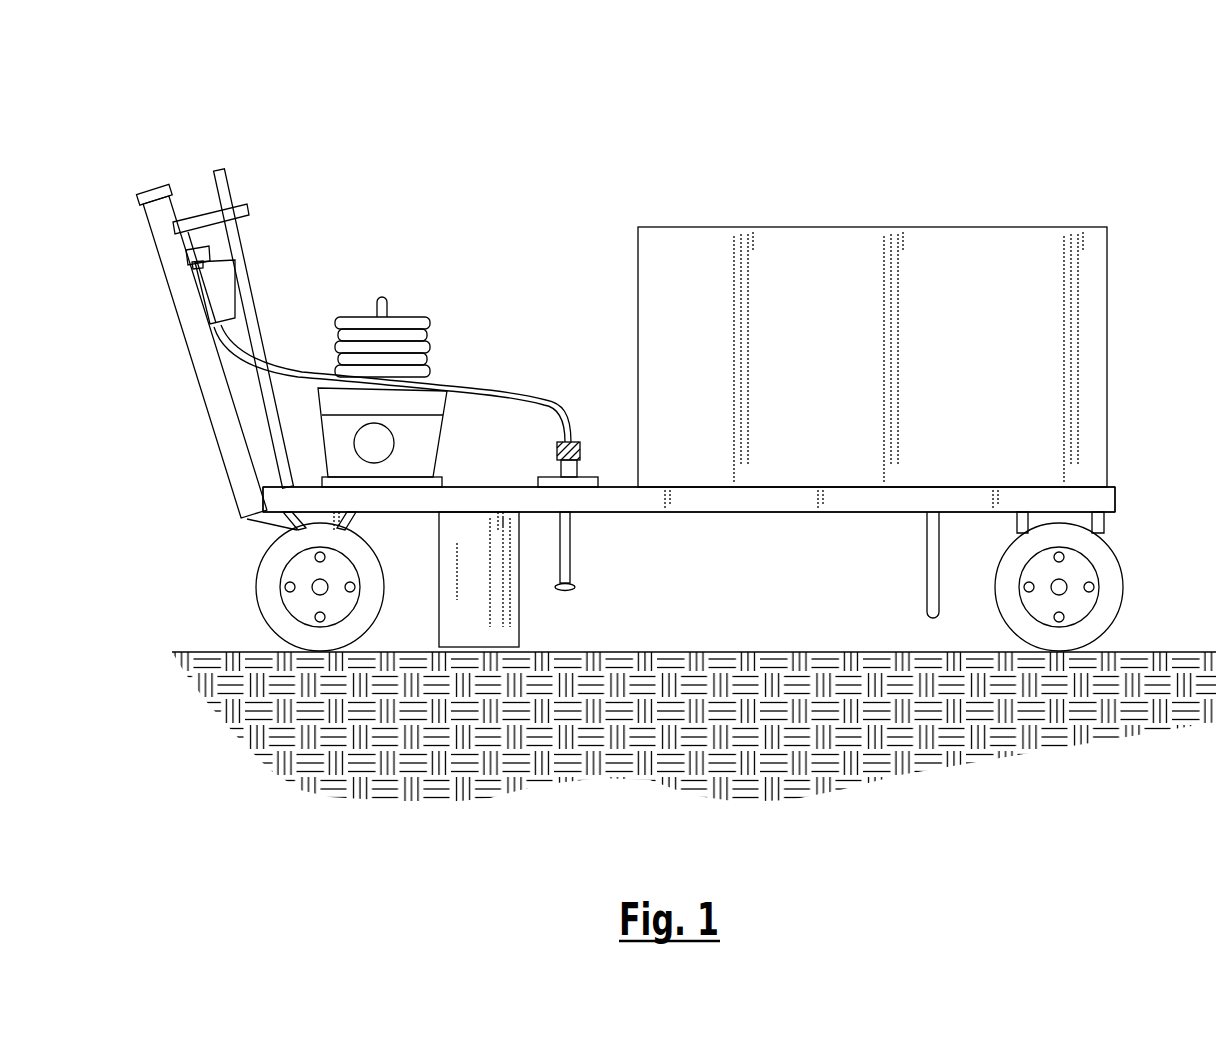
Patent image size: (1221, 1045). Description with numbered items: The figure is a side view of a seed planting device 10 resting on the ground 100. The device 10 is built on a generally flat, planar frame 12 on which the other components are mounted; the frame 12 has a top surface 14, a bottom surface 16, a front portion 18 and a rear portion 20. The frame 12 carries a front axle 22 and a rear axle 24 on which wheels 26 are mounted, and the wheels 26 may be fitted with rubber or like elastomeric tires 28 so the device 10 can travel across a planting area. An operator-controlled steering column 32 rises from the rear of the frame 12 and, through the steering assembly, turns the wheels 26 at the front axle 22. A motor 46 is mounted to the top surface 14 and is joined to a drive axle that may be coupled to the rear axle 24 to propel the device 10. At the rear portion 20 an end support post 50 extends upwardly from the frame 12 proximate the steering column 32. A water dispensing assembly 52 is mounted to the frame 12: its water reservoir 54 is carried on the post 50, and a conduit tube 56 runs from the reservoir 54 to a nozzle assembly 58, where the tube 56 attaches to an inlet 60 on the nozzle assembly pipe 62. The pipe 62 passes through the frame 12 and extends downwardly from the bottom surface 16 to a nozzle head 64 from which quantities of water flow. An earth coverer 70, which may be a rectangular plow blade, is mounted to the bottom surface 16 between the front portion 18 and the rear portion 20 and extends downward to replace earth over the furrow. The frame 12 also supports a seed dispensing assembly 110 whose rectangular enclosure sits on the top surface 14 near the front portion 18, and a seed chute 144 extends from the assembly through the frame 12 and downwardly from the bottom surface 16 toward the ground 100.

The seed planting device 10 is at (680, 86).
The frame 12 is at (840, 500).
The top surface 14 is at (611, 487).
The bottom surface 16 is at (712, 512).
The front portion 18 is at (1117, 497).
The rear portion 20 is at (262, 497).
The front axle 22 is at (1062, 587).
The rear axle 24 is at (317, 583).
The wheels 26 is at (298, 557).
The tires 28 is at (278, 620).
The steering column 32 is at (238, 237).
The motor 46 is at (405, 286).
The end support post 50 is at (202, 348).
The water dispensing assembly 52 is at (289, 317).
The water reservoir 54 is at (212, 291).
The conduit tube 56 is at (466, 385).
The nozzle assembly 58 is at (596, 553).
The inlet 60 is at (560, 440).
The nozzle assembly pipe 62 is at (562, 531).
The nozzle head 64 is at (562, 592).
The earth coverer 70 is at (426, 538).
The ground 100 is at (775, 639).
The seed dispensing assembly 110 is at (866, 211).
The seed chute 144 is at (930, 555).